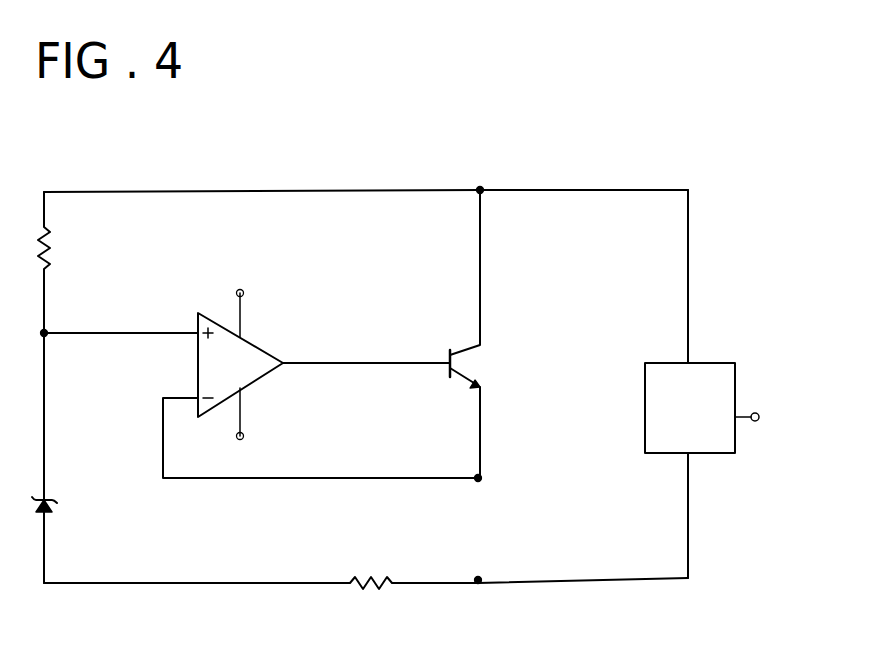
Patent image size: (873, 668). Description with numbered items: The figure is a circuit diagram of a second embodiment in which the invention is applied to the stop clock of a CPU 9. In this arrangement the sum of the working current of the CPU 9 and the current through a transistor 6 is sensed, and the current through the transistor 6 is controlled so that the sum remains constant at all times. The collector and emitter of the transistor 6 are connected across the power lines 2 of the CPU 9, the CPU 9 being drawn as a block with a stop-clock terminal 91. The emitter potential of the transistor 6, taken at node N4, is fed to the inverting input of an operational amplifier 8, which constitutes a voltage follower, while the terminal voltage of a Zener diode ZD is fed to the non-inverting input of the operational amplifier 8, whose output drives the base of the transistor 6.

The power lines 2 is at (542, 190).
The transistor 6 is at (479, 345).
The operational amplifier 8 is at (250, 381).
The CPU 9 is at (707, 363).
The stop-clock terminal 91 is at (749, 426).
The node N4 is at (482, 476).
The Zener diode ZD is at (90, 503).